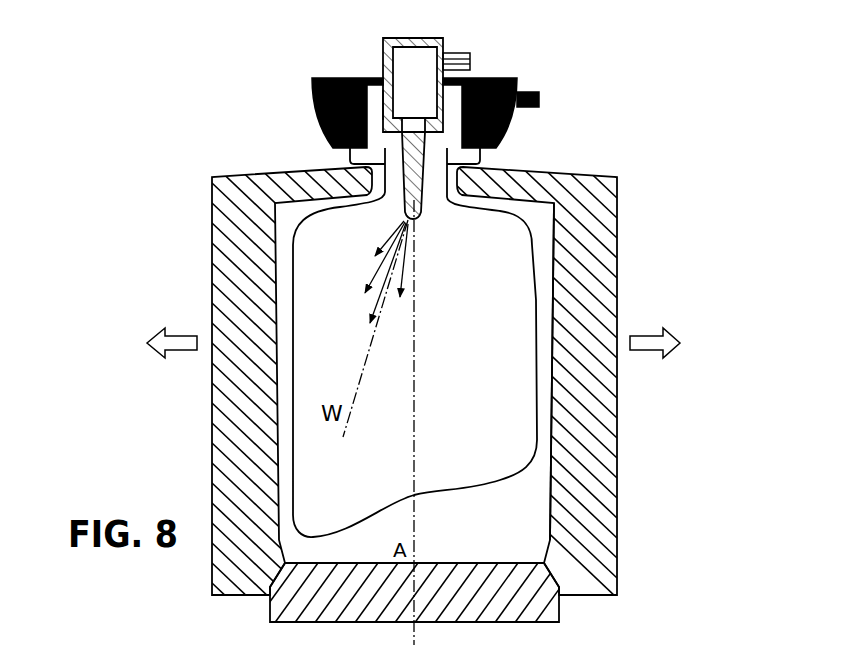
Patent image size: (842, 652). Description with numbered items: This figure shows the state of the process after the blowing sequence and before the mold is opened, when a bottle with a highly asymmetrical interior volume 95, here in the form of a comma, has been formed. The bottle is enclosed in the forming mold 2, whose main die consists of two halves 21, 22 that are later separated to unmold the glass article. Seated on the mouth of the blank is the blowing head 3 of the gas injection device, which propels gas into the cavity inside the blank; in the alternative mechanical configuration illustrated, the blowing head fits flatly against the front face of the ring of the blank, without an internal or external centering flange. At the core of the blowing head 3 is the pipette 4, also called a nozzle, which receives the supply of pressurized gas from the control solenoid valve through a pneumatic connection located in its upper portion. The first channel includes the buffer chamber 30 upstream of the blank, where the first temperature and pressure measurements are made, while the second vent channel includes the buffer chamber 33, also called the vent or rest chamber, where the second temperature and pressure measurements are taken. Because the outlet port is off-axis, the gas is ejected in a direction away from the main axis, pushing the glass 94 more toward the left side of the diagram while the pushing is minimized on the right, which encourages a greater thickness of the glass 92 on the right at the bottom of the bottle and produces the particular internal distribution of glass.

The forming mold 2 is at (207, 190).
The mold half 21 is at (243, 311).
The mold half 22 is at (578, 297).
The blowing head 3 is at (567, 70).
The buffer chamber 30 is at (388, 60).
The buffer chamber 33 is at (451, 100).
The pipette 4 is at (380, 104).
The glass 92 is at (561, 472).
The glass 94 is at (504, 552).
The interior volume 95 is at (533, 416).